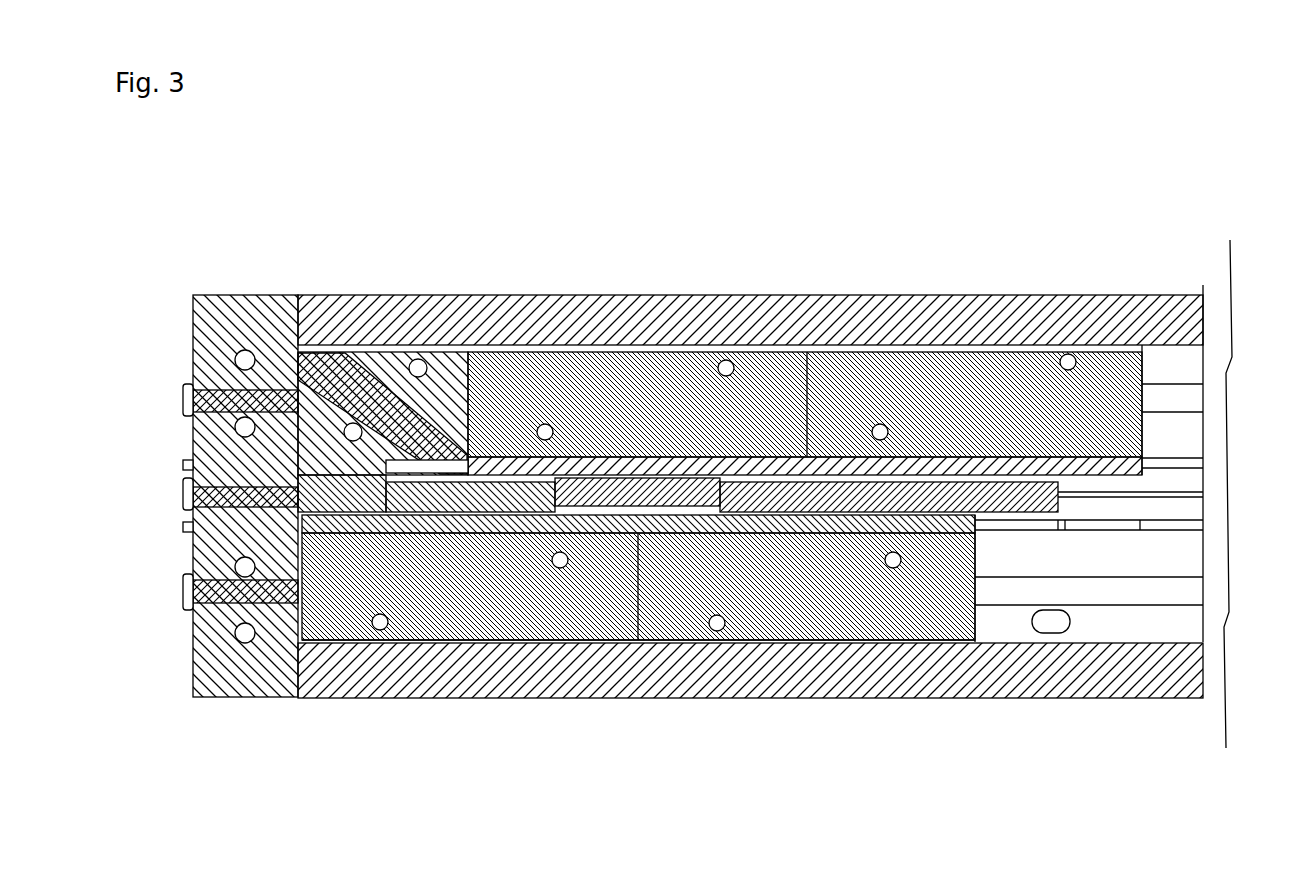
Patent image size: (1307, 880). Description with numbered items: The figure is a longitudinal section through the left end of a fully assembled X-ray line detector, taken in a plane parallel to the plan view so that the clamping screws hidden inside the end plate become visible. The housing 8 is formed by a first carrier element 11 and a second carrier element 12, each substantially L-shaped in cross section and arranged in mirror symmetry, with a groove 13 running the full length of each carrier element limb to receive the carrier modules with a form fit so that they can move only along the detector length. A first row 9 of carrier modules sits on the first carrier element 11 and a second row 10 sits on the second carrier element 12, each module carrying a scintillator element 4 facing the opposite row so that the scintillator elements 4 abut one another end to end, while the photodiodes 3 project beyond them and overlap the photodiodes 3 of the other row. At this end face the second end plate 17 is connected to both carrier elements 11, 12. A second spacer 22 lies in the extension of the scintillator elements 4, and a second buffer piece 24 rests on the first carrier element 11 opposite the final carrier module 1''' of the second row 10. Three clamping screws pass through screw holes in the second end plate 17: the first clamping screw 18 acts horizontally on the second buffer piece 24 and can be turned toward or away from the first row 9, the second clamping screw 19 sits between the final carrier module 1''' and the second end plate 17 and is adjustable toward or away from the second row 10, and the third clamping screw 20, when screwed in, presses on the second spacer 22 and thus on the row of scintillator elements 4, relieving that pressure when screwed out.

The final carrier module 1''' is at (638, 659).
The photodiode 3 is at (733, 517).
The scintillator element 4 is at (885, 487).
The housing 8 is at (900, 330).
The first row 9 is at (630, 352).
The second row 10 is at (806, 635).
The first carrier element 11 is at (1150, 365).
The second carrier element 12 is at (1183, 400).
The groove 13 is at (990, 590).
The second end plate 17 is at (262, 320).
The first clamping screw 18 is at (196, 382).
The second clamping screw 19 is at (235, 590).
The third clamping screw 20 is at (235, 497).
The second spacer 22 is at (325, 470).
The second buffer piece 24 is at (432, 372).